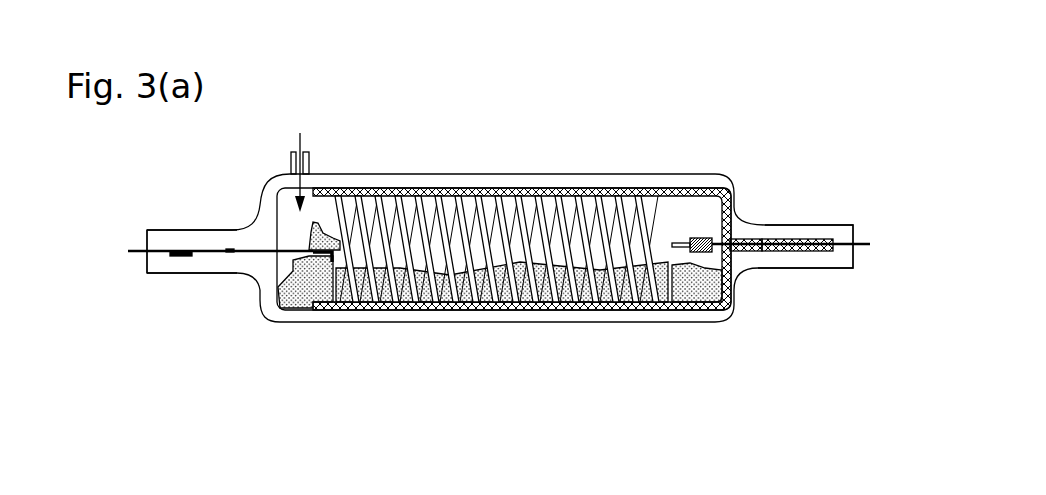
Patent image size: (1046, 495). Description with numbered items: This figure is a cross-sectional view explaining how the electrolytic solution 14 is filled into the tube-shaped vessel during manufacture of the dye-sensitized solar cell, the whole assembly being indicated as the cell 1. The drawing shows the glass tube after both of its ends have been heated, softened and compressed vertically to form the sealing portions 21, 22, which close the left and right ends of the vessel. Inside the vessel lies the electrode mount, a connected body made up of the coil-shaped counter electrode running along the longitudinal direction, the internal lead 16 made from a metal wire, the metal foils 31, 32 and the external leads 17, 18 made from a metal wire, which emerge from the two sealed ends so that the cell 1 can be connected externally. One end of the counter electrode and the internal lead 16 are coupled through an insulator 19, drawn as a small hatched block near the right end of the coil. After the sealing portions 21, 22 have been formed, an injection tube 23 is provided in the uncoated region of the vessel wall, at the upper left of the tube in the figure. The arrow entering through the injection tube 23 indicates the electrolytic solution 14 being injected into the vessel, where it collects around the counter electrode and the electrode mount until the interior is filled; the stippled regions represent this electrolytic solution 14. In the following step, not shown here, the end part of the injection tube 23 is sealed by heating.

The thermal fuse 1 is at (553, 170).
The electrolytic solution 14 is at (302, 301).
The internal lead 16 is at (748, 252).
The external lead 17 is at (152, 274).
The external lead 18 is at (864, 250).
The insulator 19 is at (702, 237).
The sealing portion 21 is at (188, 229).
The sealing portion 22 is at (787, 224).
The injection tube 23 is at (310, 168).
The metal foil 31 is at (200, 258).
The metal foil 32 is at (793, 252).